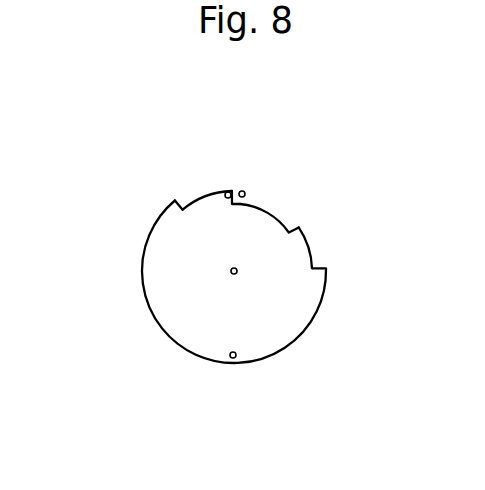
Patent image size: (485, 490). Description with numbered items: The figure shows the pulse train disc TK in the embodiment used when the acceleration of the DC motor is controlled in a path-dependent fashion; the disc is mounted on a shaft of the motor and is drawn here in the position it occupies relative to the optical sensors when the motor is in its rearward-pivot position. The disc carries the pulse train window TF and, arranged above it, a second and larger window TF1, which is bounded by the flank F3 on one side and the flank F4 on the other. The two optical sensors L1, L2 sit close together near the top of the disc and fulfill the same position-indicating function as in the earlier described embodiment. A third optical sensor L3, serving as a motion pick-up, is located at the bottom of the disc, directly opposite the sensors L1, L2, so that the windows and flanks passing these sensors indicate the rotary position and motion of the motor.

The pulse train disc TK is at (150, 268).
The flank F4 is at (180, 198).
The second window TF1 is at (200, 192).
The optical sensor L1 is at (228, 191).
The optical sensor L2 is at (242, 190).
The pulse train window TF is at (270, 217).
The flank F3 is at (322, 271).
The third optical sensor L3 is at (233, 358).